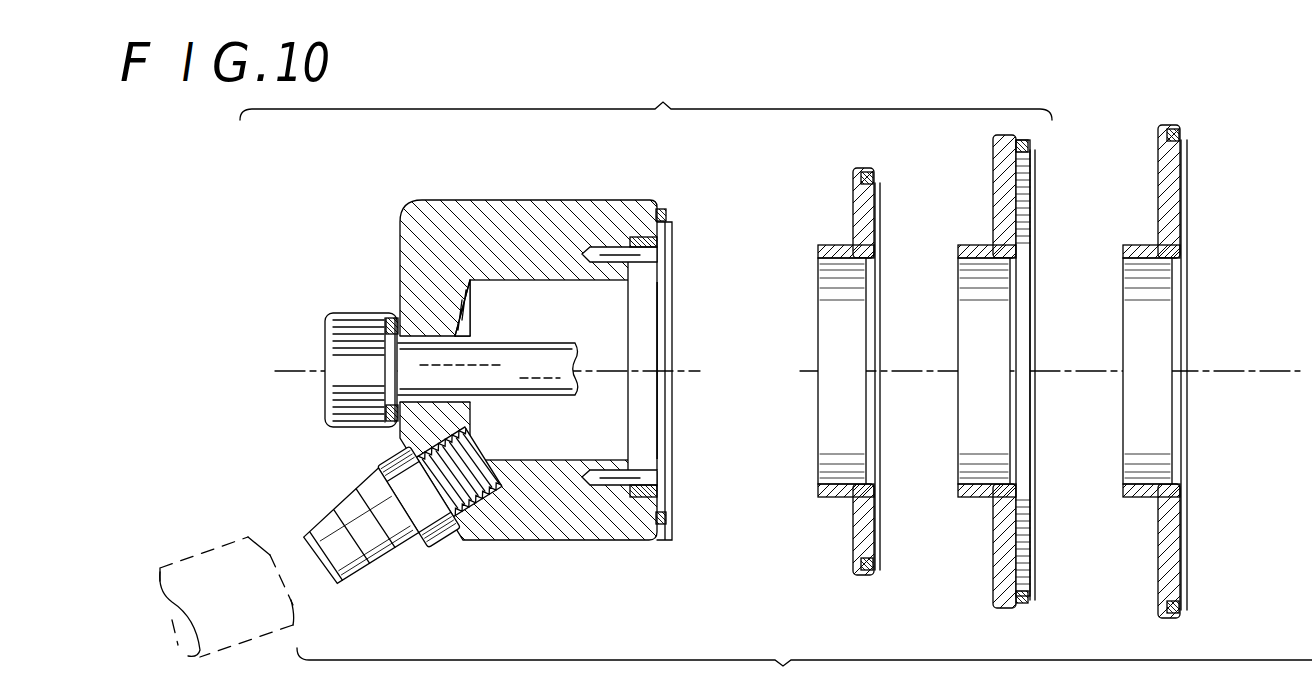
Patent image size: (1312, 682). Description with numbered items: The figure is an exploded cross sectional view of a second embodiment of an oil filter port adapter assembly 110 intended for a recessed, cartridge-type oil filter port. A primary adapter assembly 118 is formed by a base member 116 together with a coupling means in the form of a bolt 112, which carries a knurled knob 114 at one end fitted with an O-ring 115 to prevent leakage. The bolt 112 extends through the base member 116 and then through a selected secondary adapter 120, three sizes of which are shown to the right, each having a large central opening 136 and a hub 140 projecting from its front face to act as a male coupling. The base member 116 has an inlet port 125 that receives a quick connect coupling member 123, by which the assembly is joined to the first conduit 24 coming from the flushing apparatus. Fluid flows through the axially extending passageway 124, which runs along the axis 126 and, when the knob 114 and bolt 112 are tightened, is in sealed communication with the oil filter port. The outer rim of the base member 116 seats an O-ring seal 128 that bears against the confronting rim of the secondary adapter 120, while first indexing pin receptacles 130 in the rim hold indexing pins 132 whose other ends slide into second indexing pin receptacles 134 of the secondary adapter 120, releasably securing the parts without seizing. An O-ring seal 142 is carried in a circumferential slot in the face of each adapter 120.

The oil filter port adapter assembly 110 is at (663, 82).
The bolt 112 is at (503, 398).
The knurled knob 114 is at (355, 320).
The O-ring 115 is at (398, 330).
The base member 116 is at (470, 200).
The primary adapter assembly 118 is at (368, 440).
The secondary adapter 120 is at (858, 195).
The quick connect coupling member 123 is at (360, 560).
The axially extending passageway 124 is at (533, 298).
The inlet port 125 is at (528, 455).
The axis 126 is at (672, 372).
The O-ring seal 128 is at (663, 524).
The first indexing pin receptacles 130 is at (585, 260).
The indexing pins 132 is at (657, 262).
The second indexing pin receptacles 134 is at (838, 262).
The central opening 136 is at (840, 350).
The hub 140 is at (840, 494).
The O-ring seal 142 is at (878, 560).
The first conduit 24 is at (205, 555).